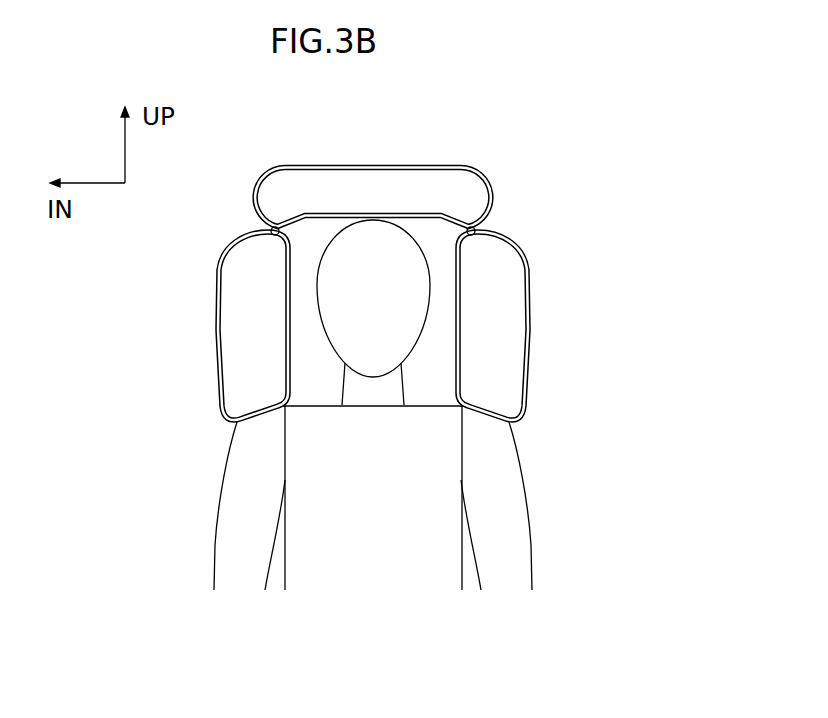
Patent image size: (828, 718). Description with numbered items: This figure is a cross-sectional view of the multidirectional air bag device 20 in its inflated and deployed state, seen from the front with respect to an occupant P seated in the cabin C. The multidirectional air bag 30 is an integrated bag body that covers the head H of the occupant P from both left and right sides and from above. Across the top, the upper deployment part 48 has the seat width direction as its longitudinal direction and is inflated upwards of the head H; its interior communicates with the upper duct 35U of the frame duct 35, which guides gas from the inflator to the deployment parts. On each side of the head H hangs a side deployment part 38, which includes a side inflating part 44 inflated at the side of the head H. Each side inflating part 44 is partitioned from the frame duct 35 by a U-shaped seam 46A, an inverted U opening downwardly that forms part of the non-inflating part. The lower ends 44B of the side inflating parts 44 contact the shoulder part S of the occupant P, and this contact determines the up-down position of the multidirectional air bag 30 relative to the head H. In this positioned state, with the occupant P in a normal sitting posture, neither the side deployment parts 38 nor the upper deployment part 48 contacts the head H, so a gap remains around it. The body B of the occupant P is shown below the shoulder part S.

The multidirectional air bag 30 is at (588, 219).
The multidirectional air bag device 20 is at (371, 273).
The upper deployment part 48 is at (411, 144).
The upper duct 35U is at (280, 185).
The frame duct 35 is at (373, 196).
The side deployment part 38 is at (185, 295).
The side inflating part 44 is at (211, 328).
The lower end of side inflating part 44B is at (258, 410).
The U-shaped seam 46A is at (273, 234).
The occupant P is at (542, 499).
The head H is at (403, 250).
The shoulder part S is at (253, 433).
The body of occupant B is at (353, 472).
The cabin C is at (611, 554).